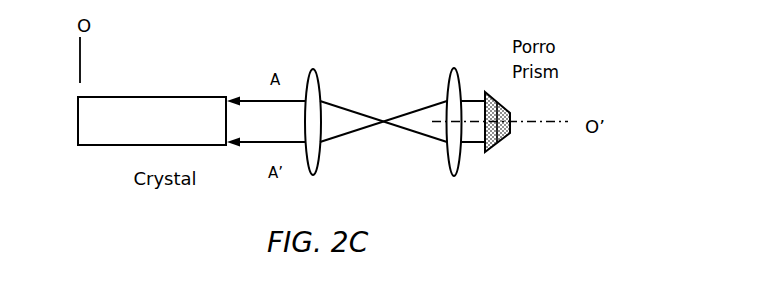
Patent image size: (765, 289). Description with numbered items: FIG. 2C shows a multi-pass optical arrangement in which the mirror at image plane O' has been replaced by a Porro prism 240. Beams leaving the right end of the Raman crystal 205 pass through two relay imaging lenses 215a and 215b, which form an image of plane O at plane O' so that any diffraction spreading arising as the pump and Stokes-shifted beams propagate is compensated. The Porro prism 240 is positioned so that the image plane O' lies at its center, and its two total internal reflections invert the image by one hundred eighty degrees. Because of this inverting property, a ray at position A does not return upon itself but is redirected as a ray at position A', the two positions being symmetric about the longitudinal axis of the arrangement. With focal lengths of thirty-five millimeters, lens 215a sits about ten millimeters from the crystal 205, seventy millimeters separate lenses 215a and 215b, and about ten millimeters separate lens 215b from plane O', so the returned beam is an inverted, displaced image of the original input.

The Raman crystal 205 is at (143, 130).
The lens 215a is at (310, 69).
The lens 215b is at (450, 69).
The Porro prism 240 is at (504, 152).